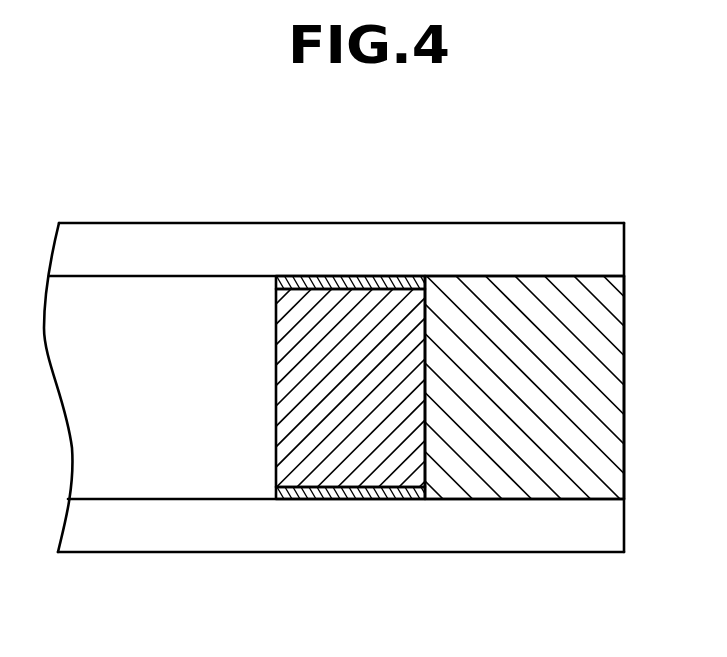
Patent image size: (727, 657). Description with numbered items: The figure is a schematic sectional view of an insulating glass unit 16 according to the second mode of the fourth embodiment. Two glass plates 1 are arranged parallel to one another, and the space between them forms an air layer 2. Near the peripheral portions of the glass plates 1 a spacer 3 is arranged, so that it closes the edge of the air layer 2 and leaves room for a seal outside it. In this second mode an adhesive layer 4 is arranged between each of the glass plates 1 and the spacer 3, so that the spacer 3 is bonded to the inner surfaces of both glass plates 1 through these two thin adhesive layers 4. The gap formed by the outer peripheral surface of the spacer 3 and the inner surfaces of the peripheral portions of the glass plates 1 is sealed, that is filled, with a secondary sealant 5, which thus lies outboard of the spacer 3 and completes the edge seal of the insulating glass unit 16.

The insulating glass unit 16 is at (196, 183).
The glass plate 1 is at (617, 253).
The air layer 2 is at (182, 483).
The spacer 3 is at (393, 298).
The adhesive layer 4 is at (349, 275).
The secondary sealant 5 is at (617, 385).